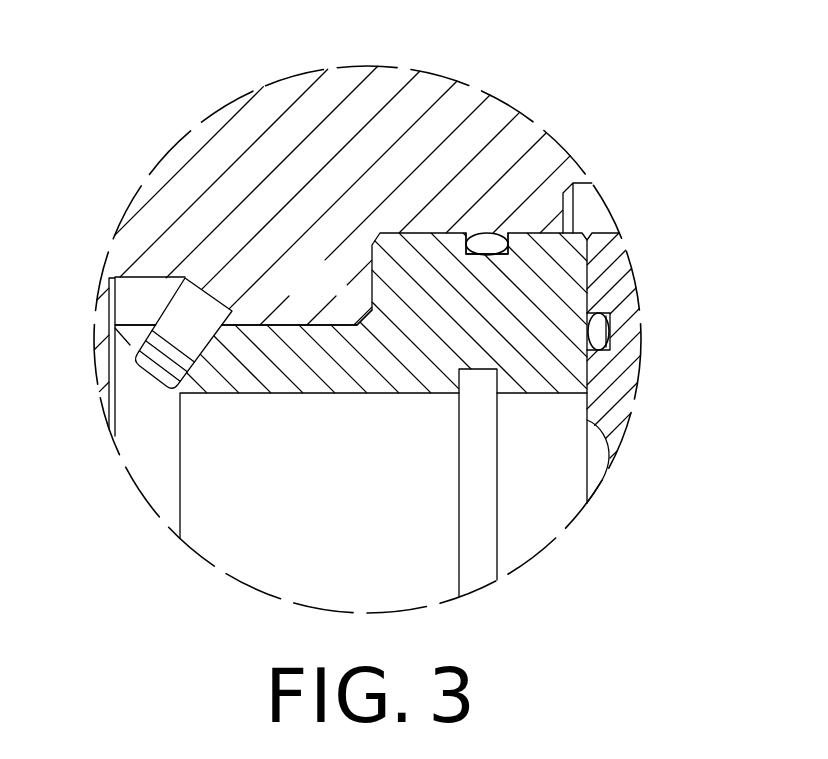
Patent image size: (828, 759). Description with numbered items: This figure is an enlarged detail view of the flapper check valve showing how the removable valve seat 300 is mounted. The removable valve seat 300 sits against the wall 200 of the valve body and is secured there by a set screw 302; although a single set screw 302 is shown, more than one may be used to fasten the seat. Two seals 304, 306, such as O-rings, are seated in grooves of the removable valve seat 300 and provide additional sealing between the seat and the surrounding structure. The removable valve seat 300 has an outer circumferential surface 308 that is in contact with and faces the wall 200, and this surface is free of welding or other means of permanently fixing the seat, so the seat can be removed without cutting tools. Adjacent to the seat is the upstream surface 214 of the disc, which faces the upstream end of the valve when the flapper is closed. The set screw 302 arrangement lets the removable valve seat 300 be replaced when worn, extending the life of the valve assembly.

The wall 200 is at (402, 90).
The upstream surface 214 is at (588, 407).
The removable valve seat 300 is at (317, 393).
The set screw 302 is at (165, 308).
The seal 304 is at (506, 257).
The seal 306 is at (612, 314).
The outer circumferential surface 308 is at (306, 325).